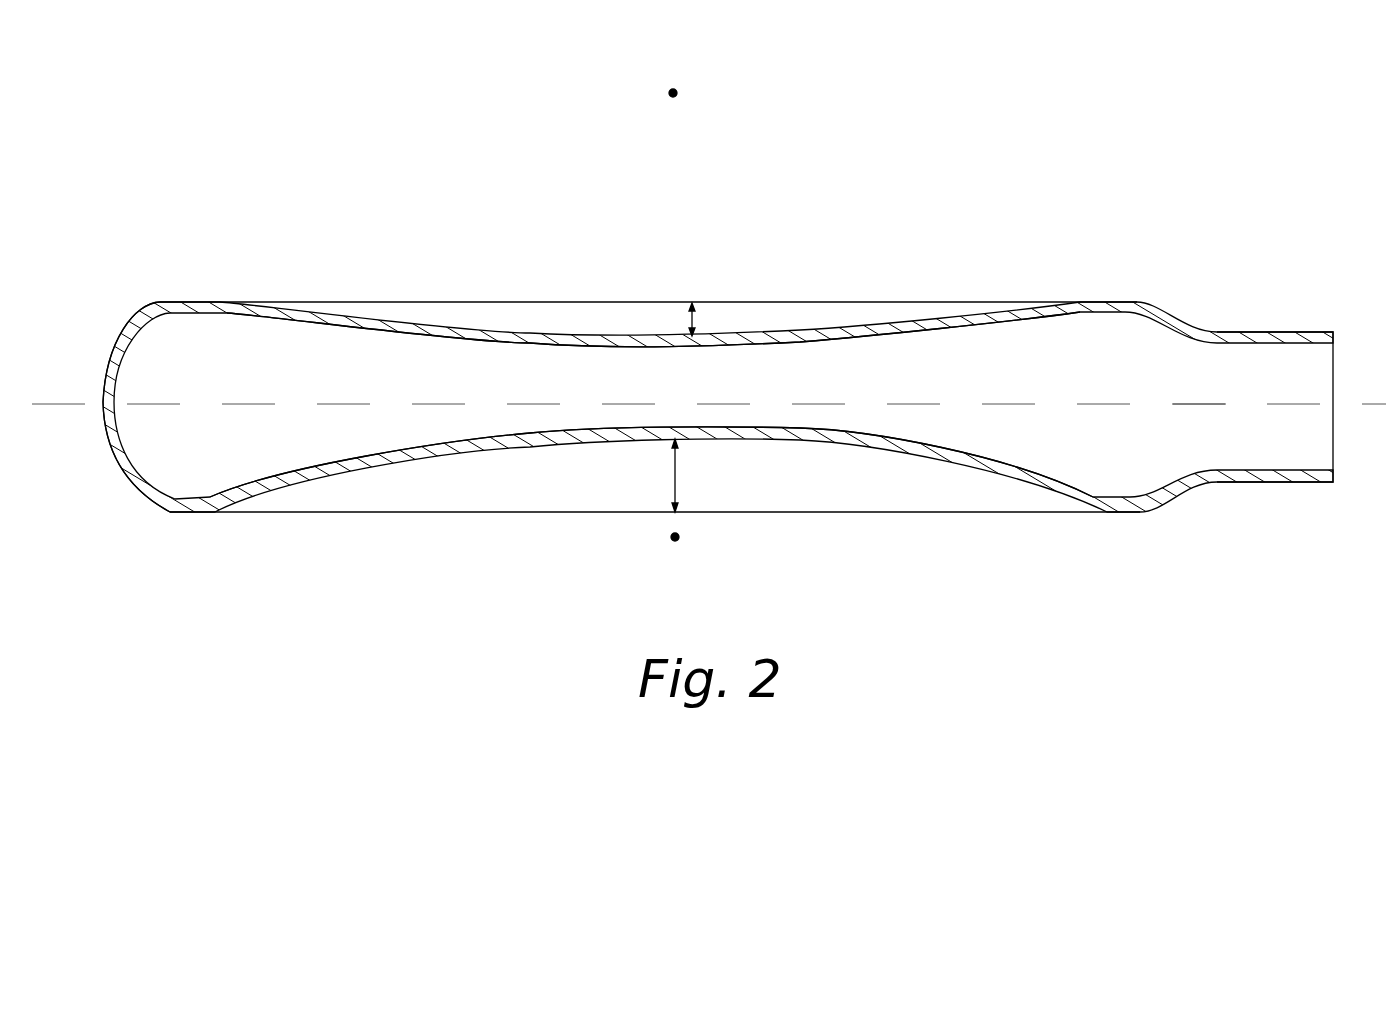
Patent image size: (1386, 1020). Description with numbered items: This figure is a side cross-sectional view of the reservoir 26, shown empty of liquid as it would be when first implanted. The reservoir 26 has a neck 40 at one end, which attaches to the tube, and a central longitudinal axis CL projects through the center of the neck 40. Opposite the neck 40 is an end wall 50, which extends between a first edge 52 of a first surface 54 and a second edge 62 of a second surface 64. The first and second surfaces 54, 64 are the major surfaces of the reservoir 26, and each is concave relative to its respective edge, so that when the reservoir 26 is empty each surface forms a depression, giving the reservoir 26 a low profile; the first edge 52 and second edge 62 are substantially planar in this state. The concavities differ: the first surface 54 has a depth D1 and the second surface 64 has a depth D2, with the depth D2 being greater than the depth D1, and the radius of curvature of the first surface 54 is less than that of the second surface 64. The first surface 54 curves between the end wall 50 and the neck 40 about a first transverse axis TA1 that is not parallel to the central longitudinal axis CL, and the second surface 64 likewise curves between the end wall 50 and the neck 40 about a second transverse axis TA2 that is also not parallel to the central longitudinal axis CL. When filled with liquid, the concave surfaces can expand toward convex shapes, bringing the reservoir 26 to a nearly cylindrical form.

The reservoir 26 is at (916, 134).
The neck 40 is at (1313, 332).
The end wall 50 is at (104, 403).
The first edge 52 is at (168, 302).
The first surface 54 is at (517, 332).
The second edge 62 is at (176, 513).
The second surface 64 is at (512, 450).
The central longitudinal axis CL is at (1190, 405).
The depth D1 is at (700, 322).
The depth D2 is at (678, 476).
The first transverse axis TA1 is at (679, 93).
The second transverse axis TA2 is at (670, 538).